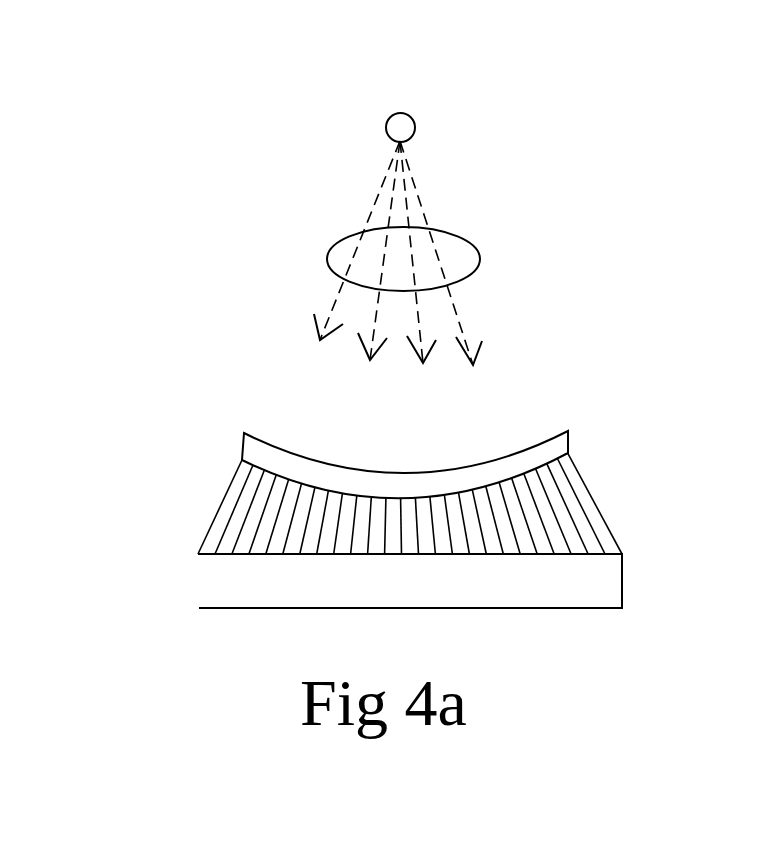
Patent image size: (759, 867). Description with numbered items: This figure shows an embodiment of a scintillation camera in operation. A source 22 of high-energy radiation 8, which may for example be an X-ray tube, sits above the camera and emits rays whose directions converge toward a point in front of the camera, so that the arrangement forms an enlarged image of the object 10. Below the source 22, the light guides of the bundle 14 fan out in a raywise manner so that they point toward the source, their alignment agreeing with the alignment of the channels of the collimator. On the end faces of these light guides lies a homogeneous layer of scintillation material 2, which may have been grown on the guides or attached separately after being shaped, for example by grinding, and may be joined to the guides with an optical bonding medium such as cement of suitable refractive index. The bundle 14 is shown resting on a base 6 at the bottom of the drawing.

The light source 22 is at (414, 122).
The light rays 8 is at (417, 202).
The lens 10 is at (418, 250).
The curved plate / cap 2 is at (548, 437).
The fins / ribs 14 is at (578, 512).
The base / substrate 6 is at (605, 568).